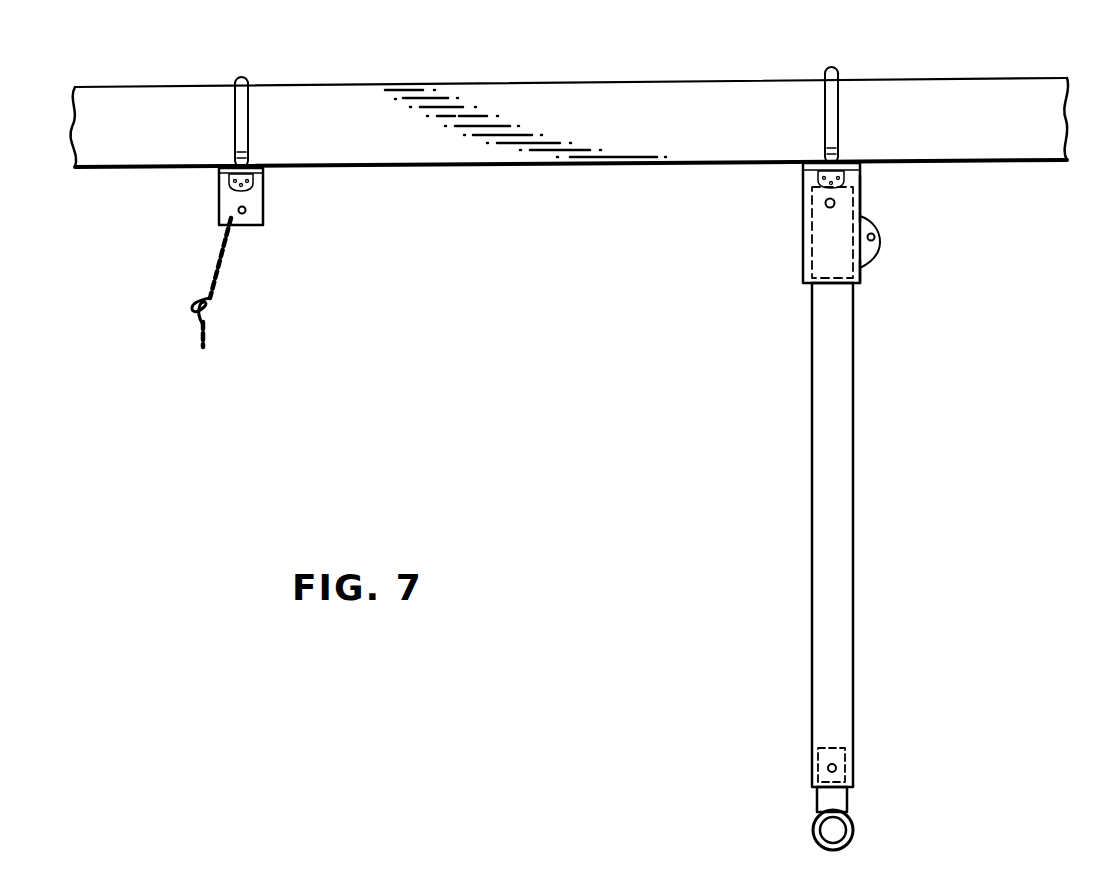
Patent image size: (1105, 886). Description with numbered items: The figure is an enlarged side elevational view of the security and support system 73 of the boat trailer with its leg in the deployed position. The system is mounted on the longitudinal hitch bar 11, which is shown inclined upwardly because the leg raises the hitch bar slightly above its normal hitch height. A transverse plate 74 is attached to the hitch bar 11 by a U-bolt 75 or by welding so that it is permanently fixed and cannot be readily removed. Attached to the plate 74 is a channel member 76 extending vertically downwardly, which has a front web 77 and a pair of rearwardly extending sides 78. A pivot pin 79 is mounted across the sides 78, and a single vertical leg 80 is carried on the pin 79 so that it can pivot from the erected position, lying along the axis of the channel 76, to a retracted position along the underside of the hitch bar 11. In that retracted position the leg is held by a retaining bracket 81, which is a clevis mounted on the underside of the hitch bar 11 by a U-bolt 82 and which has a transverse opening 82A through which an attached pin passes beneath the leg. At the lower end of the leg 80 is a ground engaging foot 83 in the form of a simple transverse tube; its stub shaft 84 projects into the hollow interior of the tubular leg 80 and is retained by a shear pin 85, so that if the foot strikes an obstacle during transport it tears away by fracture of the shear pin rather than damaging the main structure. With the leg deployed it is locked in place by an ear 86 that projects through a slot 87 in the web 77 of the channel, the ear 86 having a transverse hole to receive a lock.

The hitch bar 11 is at (573, 105).
The security and support system 73 is at (735, 310).
The transverse plate 74 is at (849, 156).
The U-bolt 75 is at (815, 105).
The channel member 76 is at (866, 193).
The front web 77 is at (866, 270).
The rearwardly extending sides 78 is at (832, 292).
The pivot pin 79 is at (826, 207).
The vertical leg 80 is at (838, 468).
The retaining bracket 81 is at (287, 257).
The U-bolt 82 is at (256, 112).
The transverse opening 82A is at (243, 214).
The ground engaging foot 83 is at (810, 823).
The stub shaft 84 is at (838, 798).
The shear pin 85 is at (829, 765).
The ear 86 is at (880, 244).
The slot 87 is at (868, 212).